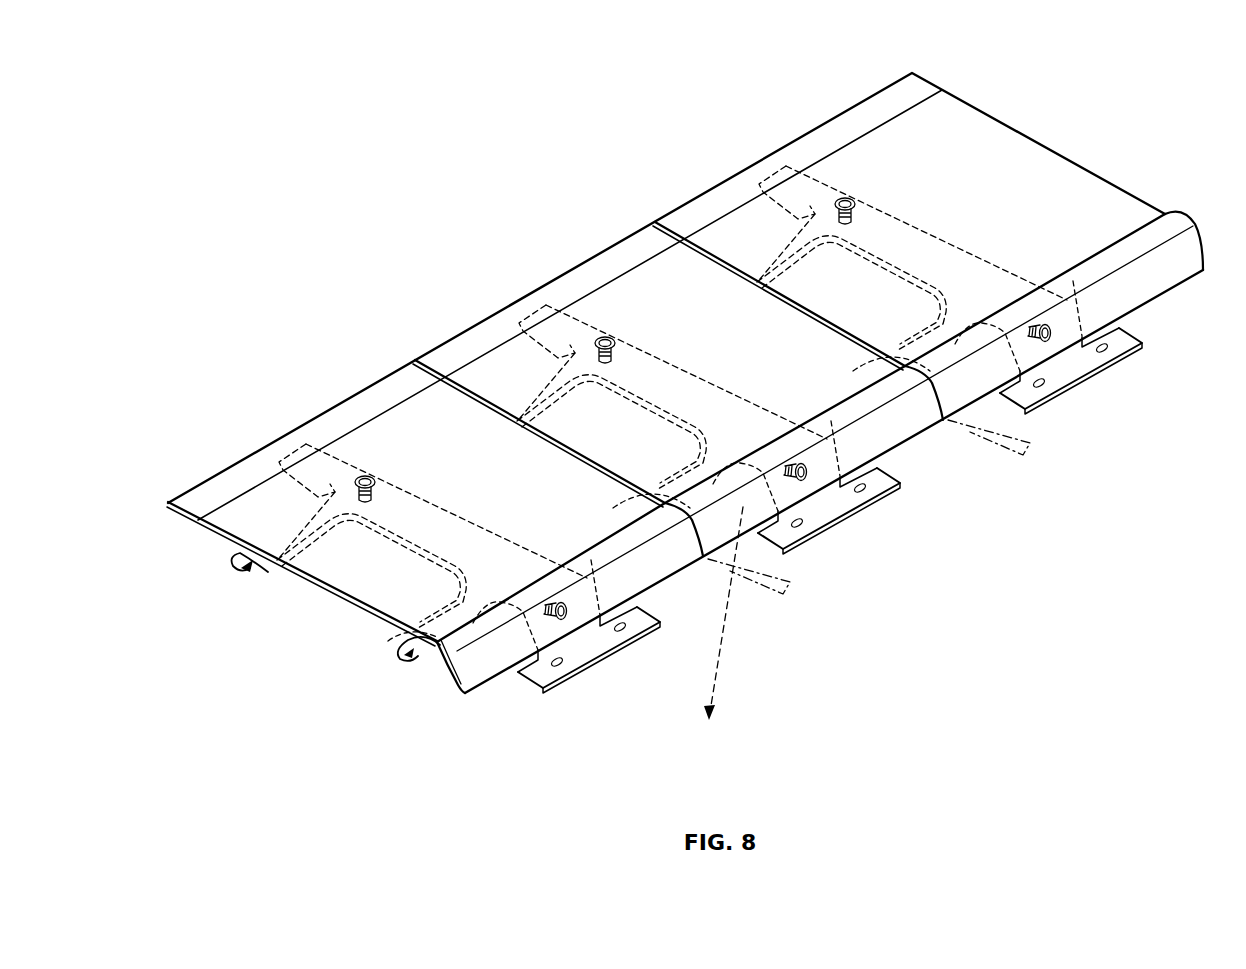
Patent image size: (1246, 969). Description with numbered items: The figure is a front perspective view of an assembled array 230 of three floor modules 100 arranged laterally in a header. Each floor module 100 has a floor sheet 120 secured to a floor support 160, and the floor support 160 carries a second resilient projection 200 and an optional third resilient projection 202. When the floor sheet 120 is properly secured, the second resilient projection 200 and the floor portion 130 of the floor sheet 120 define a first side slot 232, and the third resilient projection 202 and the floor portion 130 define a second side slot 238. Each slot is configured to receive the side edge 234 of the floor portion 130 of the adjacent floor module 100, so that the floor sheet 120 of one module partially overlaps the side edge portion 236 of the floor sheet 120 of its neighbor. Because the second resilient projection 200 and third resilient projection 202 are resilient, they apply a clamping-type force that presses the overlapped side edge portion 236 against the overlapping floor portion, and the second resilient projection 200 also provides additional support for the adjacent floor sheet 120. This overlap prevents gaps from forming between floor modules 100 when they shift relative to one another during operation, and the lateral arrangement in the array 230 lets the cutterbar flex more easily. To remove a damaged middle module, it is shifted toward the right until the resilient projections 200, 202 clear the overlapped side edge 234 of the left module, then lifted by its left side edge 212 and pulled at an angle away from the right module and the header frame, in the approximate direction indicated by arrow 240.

The array 230 is at (370, 147).
The floor module 100 is at (757, 141).
The floor sheet 120 is at (390, 426).
The floor portion 130 is at (340, 587).
The floor support 160 is at (1094, 390).
The second resilient projection 200 is at (618, 503).
The third resilient projection 202 is at (372, 402).
The side edge 212 is at (683, 254).
The first side slot 232 is at (395, 652).
The side edge 234 is at (1035, 133).
The side edge portion 236 is at (1025, 452).
The second side slot 238 is at (242, 566).
The arrow 240 is at (727, 630).